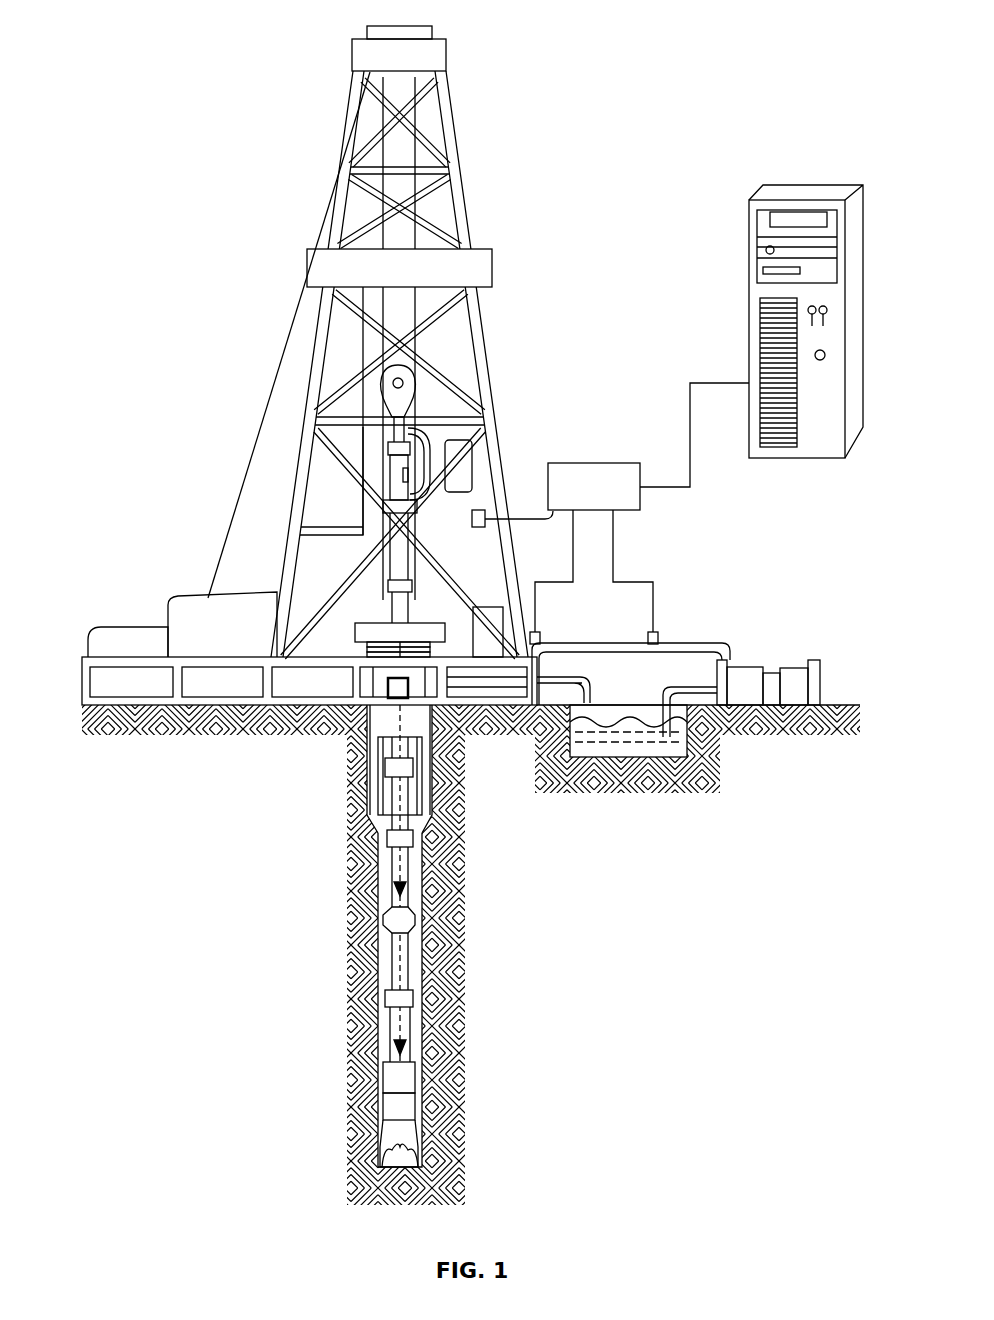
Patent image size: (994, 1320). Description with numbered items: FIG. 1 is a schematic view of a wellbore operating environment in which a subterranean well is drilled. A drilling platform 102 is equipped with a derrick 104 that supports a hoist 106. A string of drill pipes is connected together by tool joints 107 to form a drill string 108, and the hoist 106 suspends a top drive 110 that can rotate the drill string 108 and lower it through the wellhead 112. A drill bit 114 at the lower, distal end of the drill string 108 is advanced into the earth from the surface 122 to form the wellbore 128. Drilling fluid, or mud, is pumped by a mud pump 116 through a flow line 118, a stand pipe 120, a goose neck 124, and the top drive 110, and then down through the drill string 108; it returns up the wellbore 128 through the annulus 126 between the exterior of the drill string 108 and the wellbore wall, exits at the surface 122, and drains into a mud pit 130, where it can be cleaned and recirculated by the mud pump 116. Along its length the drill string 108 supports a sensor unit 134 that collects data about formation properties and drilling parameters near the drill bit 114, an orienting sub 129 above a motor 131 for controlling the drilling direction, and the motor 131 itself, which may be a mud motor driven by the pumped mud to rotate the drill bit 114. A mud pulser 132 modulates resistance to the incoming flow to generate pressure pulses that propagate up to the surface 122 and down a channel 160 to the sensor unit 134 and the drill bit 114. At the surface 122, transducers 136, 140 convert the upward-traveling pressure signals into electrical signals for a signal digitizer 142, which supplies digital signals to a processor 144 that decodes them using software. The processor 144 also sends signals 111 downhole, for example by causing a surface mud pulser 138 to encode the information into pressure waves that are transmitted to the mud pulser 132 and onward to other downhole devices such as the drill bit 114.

The drilling platform 102 is at (82, 683).
The derrick 104 is at (450, 110).
The hoist 106 is at (415, 368).
The tool joints 107 is at (377, 836).
The drill string 108 is at (415, 876).
The top drive 110 is at (417, 458).
The signals 111 is at (407, 851).
The wellhead 112 is at (363, 623).
The drill bit 114 is at (414, 1152).
The mud pump 116 is at (736, 674).
The mud flow line 118 is at (672, 656).
The stand pipe 120 is at (472, 468).
The surface 122 is at (858, 705).
The goose neck 124 is at (442, 408).
The annulus 126 is at (462, 950).
The wellbore 128 is at (427, 900).
The orienting sub 129 is at (398, 1066).
The mud pit 130 is at (639, 748).
The motor 131 is at (390, 1112).
The mud pulser 132 is at (381, 915).
The sensor unit 134 is at (392, 1083).
The transducer 136 is at (487, 522).
The mud pulser 138 is at (541, 634).
The transducer 140 is at (648, 638).
The signal digitizer 142 is at (648, 446).
The processor 144 is at (830, 183).
The channel 160 is at (383, 950).